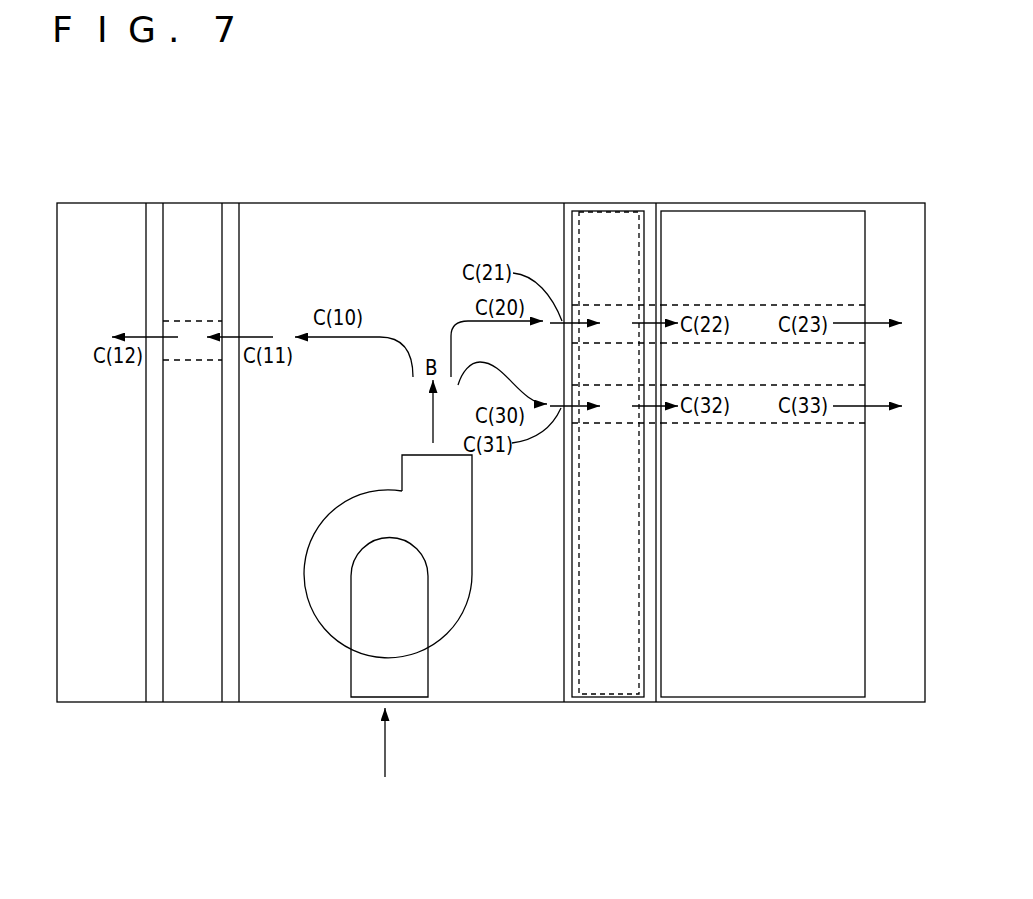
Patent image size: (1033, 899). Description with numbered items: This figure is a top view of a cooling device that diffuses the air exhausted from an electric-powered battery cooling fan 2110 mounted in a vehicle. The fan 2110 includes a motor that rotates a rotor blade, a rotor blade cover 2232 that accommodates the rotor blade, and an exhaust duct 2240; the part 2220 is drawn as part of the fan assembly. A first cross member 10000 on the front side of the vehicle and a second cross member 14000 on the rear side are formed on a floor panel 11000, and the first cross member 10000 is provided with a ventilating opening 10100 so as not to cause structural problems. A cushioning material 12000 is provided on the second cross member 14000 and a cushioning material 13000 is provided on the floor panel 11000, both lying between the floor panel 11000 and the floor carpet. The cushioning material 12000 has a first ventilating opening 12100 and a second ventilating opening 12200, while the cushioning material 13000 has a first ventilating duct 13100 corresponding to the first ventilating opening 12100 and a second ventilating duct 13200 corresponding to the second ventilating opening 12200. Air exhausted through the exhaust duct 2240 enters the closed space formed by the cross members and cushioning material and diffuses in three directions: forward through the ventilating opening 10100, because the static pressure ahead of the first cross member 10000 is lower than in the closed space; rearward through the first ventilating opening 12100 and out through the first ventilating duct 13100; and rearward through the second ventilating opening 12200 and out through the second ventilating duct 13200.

The first cross member 10000 is at (195, 210).
The ventilating opening 10100 is at (178, 323).
The floor panel 11000 is at (367, 213).
The second cross member 14000 is at (565, 215).
The cushioning material 12000 is at (623, 217).
The cushioning material 13000 is at (787, 218).
The first ventilating opening 12100 is at (620, 308).
The first ventilating duct 13100 is at (765, 313).
The second ventilating opening 12200 is at (620, 417).
The second ventilating duct 13200 is at (767, 423).
The electric-powered battery cooling fan 2110 is at (421, 540).
The exhaust duct 2240 is at (443, 473).
The rotor blade cover 2232 is at (470, 604).
The fan motor 2220 is at (413, 667).